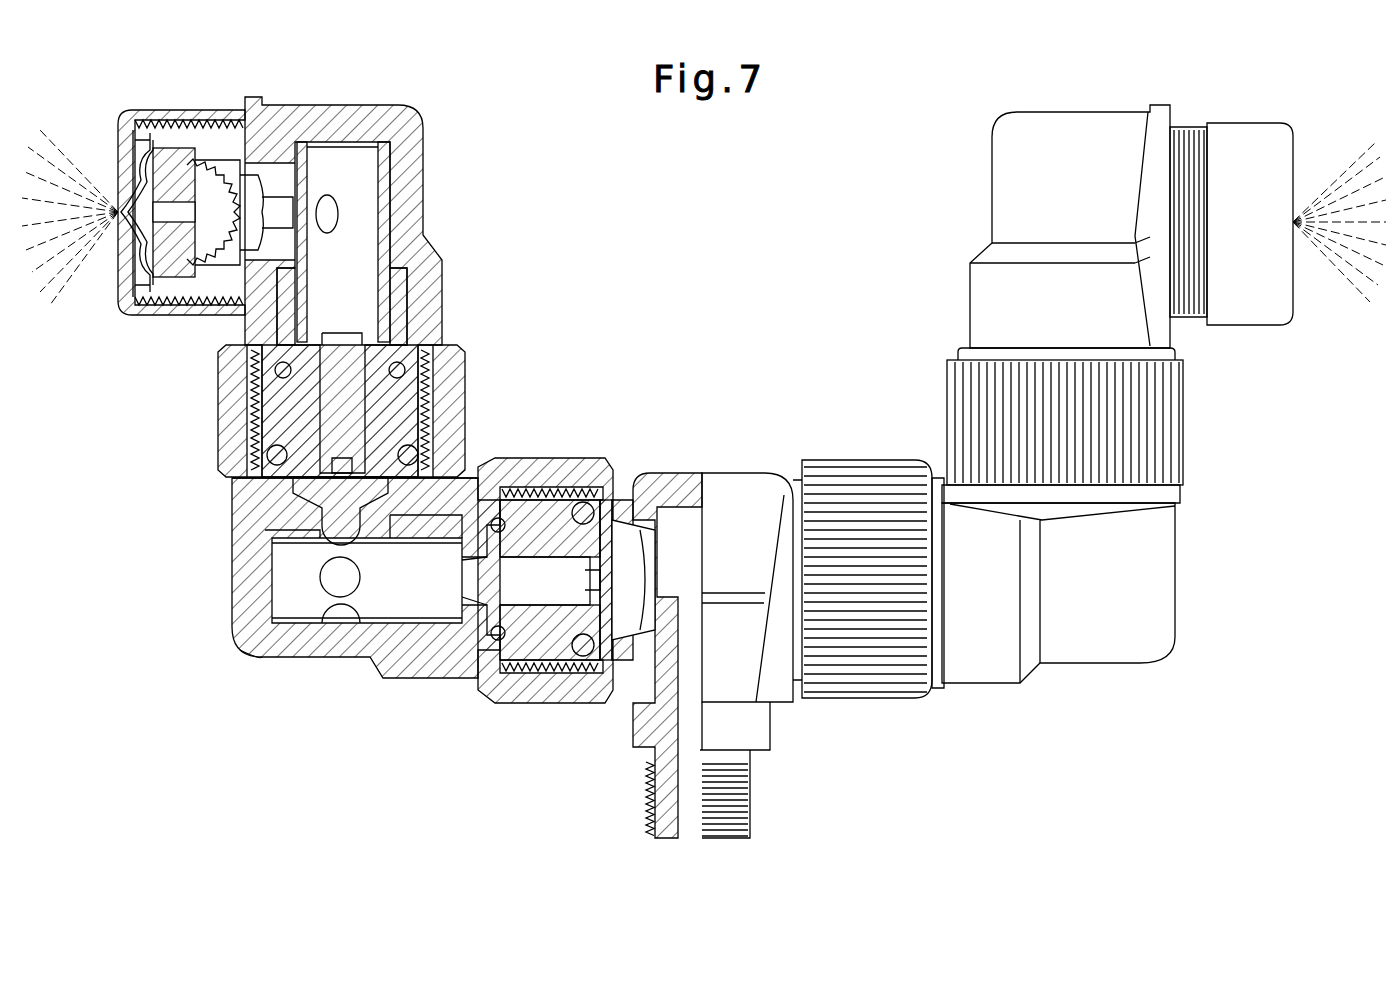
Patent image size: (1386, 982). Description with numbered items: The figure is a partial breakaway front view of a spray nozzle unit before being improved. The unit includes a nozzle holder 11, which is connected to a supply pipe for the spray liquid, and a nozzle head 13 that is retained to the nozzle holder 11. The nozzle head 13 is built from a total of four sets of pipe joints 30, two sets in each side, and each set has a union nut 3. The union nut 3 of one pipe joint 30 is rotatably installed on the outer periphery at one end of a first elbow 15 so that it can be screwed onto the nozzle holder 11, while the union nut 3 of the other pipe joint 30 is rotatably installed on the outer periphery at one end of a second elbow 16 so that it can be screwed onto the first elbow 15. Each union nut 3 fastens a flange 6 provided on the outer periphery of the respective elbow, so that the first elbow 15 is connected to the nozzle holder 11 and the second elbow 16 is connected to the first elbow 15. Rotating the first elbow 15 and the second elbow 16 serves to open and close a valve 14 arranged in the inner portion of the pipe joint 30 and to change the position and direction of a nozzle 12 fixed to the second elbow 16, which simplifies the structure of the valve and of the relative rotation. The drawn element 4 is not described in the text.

The union nut 3 is at (225, 429).
The knurled adjusting nut 4 is at (828, 452).
The flange 6 is at (420, 340).
The nozzle holder 11 is at (748, 675).
The nozzle 12 is at (181, 106).
The nozzle head 13 is at (233, 642).
The valve 14 is at (418, 620).
The first elbow 15 is at (270, 635).
The second elbow 16 is at (405, 131).
The pipe joint 30 is at (215, 378).